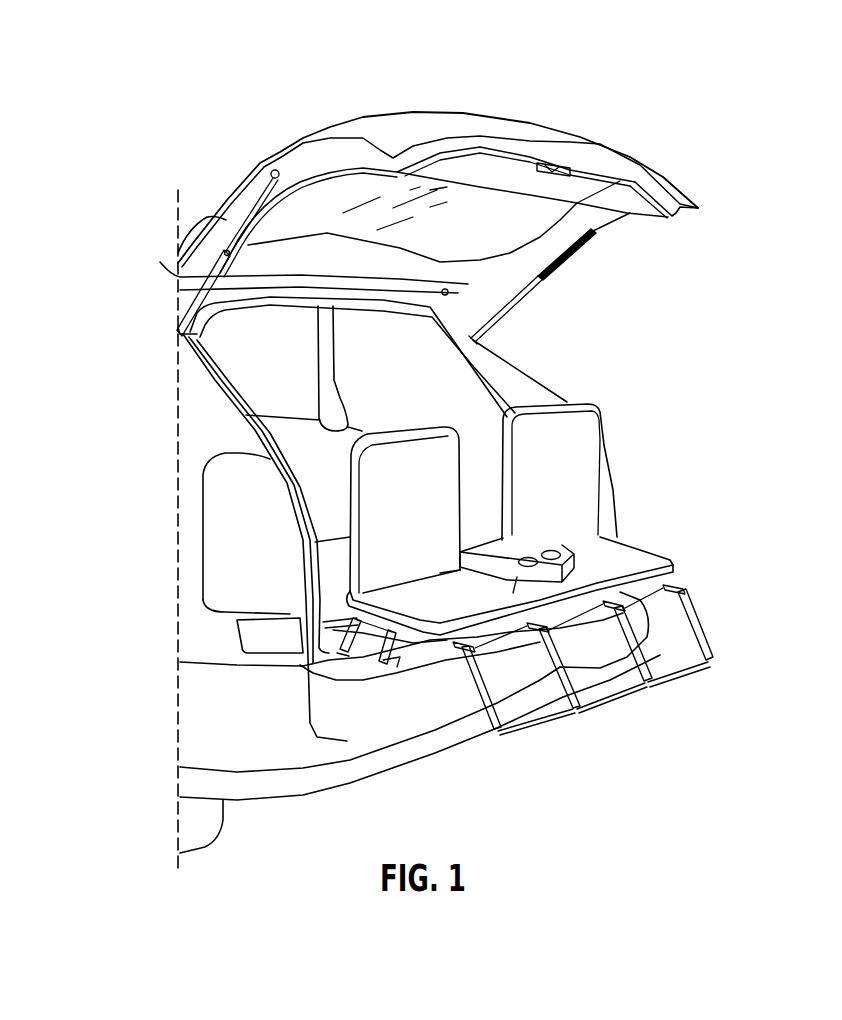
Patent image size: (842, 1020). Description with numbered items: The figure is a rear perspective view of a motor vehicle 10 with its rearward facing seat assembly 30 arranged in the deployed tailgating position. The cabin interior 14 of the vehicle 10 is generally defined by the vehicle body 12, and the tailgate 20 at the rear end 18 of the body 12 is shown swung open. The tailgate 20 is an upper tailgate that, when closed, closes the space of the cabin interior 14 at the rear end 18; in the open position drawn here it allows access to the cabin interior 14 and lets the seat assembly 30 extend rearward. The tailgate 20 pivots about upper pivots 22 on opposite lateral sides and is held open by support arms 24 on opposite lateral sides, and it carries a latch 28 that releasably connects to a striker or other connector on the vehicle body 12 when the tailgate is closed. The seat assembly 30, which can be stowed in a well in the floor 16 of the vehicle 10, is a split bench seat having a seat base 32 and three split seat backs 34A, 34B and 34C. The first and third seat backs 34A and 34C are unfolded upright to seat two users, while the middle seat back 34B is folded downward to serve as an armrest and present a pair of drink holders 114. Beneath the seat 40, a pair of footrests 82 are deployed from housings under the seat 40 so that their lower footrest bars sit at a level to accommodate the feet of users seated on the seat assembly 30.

The motor vehicle 10 is at (218, 99).
The vehicle body 12 is at (210, 630).
The cabin interior 14 is at (290, 436).
The floor 16 is at (370, 632).
The rear end 18 is at (418, 717).
The tailgate 20 is at (638, 160).
The upper pivots 22 is at (450, 294).
The support arms 24 is at (180, 277).
The latch 28 is at (590, 167).
The seat assembly 30 is at (697, 588).
The seat base 32 is at (640, 560).
The first seat back 34A is at (385, 509).
The middle seat back 34B is at (522, 552).
The third seat back 34C is at (553, 425).
The seat 40 is at (603, 406).
The footrests 82 is at (717, 657).
The drink holders 114 is at (553, 547).